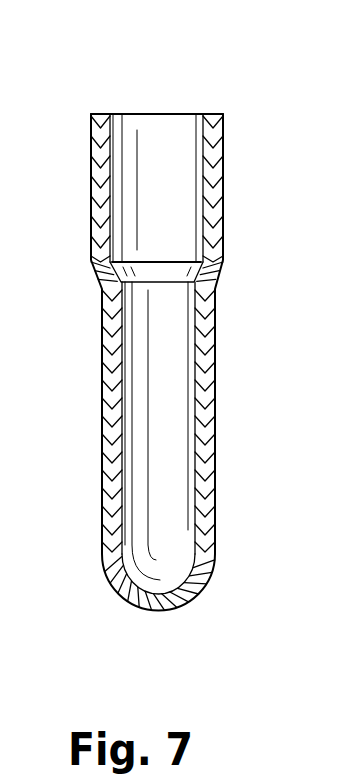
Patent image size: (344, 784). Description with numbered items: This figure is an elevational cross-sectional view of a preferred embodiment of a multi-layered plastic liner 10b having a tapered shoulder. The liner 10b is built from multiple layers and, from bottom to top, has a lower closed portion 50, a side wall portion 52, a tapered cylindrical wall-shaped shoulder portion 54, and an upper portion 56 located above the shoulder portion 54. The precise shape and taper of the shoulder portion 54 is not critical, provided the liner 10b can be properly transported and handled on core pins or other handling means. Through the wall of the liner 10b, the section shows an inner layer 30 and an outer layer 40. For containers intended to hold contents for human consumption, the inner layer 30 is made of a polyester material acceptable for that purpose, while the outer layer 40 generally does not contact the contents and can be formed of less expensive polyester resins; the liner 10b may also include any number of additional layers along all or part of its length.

The multi-layered liner 10b is at (223, 102).
The inner layer 30 is at (108, 138).
The outer layer 40 is at (224, 195).
The lower closed portion 50 is at (78, 543).
The side wall portion 52 is at (78, 537).
The tapered cylindrical wall-shaped shoulder portion 54 is at (95, 281).
The upper portion 56 is at (78, 113).